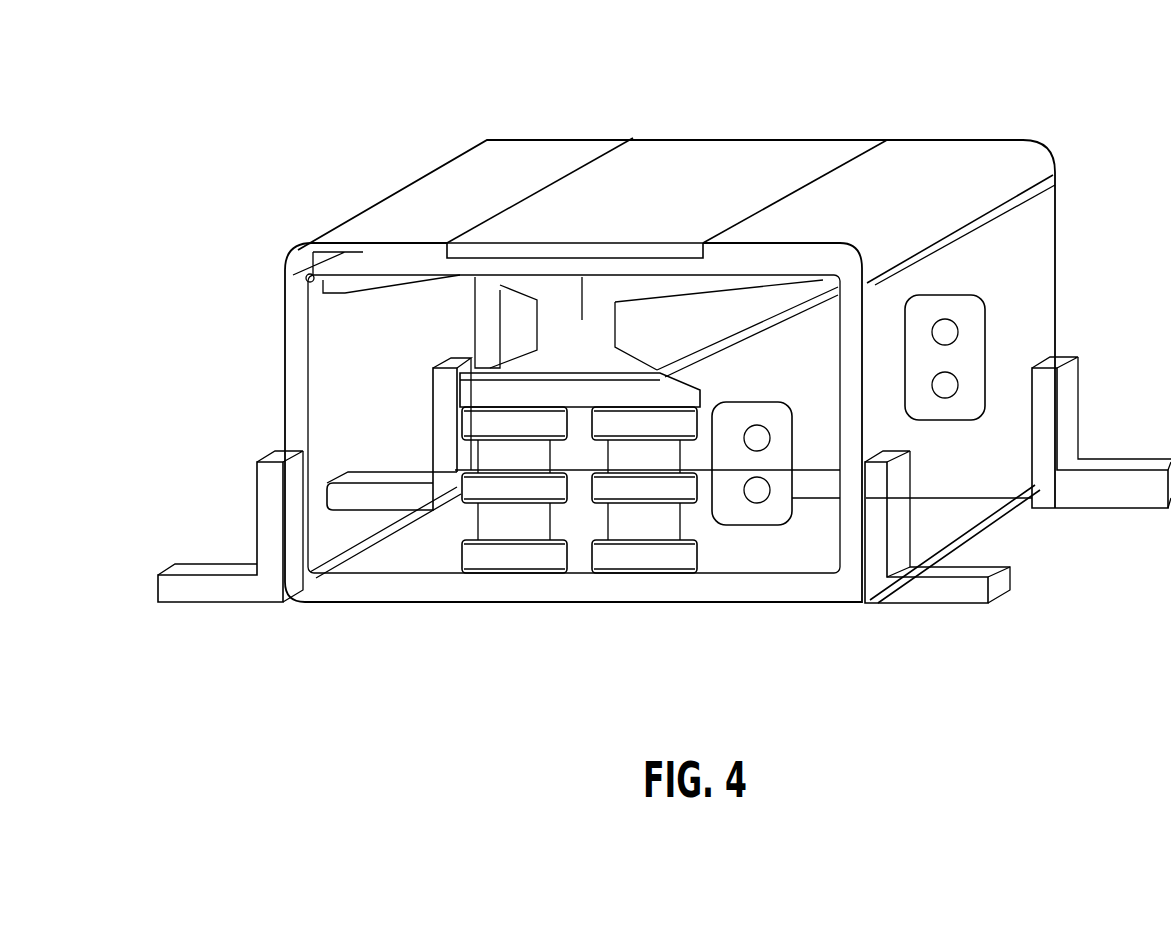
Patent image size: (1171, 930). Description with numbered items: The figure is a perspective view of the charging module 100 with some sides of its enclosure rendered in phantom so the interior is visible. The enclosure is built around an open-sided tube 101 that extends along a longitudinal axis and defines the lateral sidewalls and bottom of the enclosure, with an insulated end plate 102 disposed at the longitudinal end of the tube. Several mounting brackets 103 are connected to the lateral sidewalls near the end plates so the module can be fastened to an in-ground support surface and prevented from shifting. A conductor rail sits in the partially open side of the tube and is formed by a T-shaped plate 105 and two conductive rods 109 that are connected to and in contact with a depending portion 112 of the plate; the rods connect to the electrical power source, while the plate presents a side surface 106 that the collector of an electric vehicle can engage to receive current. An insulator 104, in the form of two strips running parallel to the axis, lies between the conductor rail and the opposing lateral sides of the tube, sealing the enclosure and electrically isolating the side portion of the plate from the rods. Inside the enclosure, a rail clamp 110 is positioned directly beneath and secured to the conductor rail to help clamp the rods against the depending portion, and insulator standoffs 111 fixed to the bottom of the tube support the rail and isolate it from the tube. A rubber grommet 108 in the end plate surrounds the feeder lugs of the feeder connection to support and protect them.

The charging module 100 is at (286, 124).
The open-sided tube 101 is at (1007, 472).
The insulated end plate 102 is at (1048, 214).
The mounting bracket 103 is at (183, 592).
The insulator 104 is at (487, 140).
The T-shaped plate 105 is at (683, 157).
The side surface 106 is at (643, 200).
The rubber grommet 108 is at (763, 508).
The conductive rod 109 is at (547, 343).
The rail clamp 110 is at (580, 380).
The insulator standoff 111 is at (498, 557).
The depending portion 112 is at (540, 332).